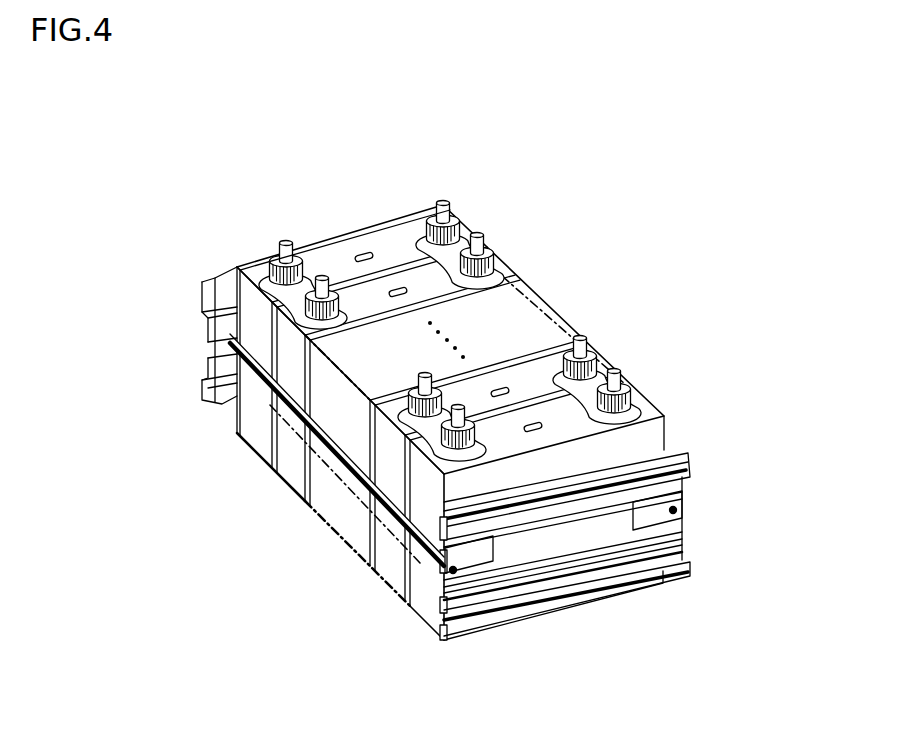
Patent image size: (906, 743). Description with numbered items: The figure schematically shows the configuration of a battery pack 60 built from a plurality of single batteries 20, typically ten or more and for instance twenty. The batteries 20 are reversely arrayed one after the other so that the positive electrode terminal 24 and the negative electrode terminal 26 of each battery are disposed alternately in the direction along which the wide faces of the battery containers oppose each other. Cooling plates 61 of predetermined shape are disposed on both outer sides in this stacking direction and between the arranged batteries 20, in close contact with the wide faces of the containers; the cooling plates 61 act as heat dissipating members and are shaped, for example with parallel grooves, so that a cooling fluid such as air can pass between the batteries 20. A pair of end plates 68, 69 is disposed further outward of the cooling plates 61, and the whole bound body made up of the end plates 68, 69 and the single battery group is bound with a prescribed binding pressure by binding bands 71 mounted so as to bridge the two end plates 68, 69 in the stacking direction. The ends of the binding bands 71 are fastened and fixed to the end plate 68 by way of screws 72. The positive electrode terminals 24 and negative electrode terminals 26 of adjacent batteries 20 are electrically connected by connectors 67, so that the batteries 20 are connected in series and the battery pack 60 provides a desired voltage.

The battery 20 is at (424, 283).
The positive electrode terminal 24 is at (286, 250).
The negative electrode terminal 26 is at (323, 285).
The battery pack 60 is at (708, 230).
The cooling plate 61 is at (660, 416).
The connector 67 is at (312, 291).
The end plate 68 is at (690, 452).
The end plate 69 is at (206, 286).
The binding band 71 is at (398, 528).
The screw 72 is at (690, 508).